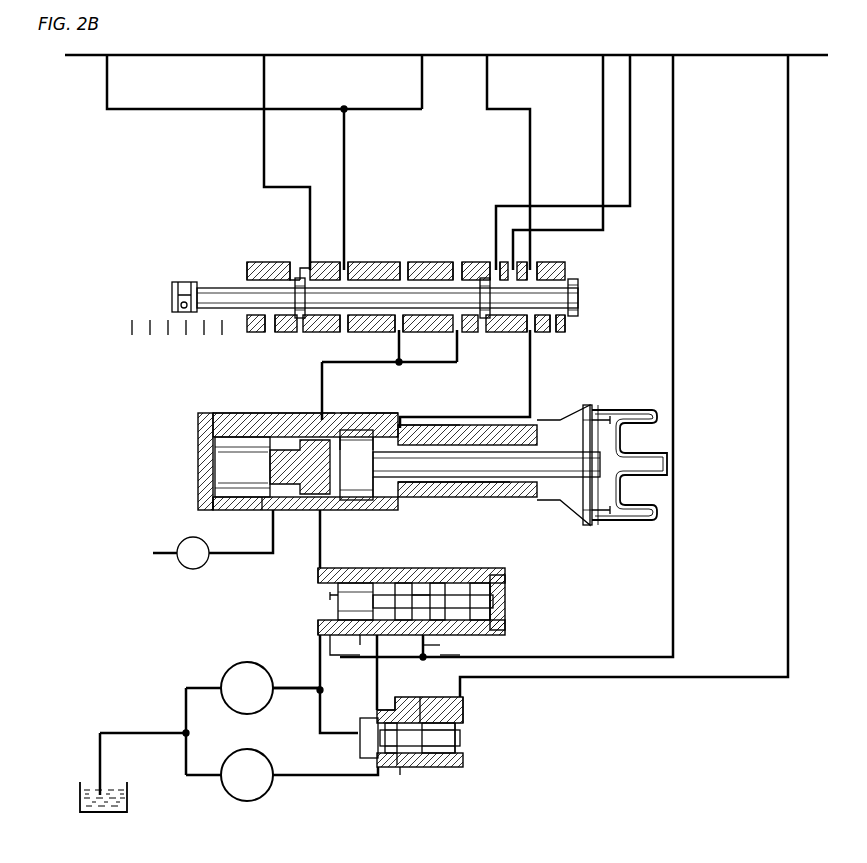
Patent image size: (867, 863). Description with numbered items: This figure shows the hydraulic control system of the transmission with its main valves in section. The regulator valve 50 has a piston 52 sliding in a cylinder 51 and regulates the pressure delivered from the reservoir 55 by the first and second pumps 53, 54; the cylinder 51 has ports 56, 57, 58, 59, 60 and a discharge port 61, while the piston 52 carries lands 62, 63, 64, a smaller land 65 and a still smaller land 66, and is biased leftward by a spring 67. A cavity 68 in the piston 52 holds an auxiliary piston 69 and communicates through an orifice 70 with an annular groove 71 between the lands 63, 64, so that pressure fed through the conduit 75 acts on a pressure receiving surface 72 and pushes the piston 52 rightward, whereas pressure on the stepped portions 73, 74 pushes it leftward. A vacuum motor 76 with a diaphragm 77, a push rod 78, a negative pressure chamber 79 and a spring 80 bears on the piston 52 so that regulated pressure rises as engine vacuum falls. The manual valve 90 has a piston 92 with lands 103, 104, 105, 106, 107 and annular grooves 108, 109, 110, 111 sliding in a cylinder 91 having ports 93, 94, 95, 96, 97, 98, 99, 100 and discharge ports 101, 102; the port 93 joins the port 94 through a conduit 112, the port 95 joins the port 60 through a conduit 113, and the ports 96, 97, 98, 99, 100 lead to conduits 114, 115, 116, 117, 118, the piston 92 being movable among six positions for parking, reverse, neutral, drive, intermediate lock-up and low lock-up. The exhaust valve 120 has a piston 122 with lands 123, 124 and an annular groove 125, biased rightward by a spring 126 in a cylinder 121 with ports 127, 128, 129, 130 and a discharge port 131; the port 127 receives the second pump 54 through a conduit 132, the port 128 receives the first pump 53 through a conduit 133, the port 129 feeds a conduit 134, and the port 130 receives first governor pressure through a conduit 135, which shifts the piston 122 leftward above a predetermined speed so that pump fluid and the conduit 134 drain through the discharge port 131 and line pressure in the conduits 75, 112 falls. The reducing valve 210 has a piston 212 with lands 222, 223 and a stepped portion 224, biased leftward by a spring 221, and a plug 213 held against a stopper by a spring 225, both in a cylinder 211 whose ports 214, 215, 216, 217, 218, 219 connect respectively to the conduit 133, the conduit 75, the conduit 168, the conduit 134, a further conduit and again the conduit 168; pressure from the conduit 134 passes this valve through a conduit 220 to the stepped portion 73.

The regulator valve 50 is at (103, 462).
The cylinder 51 is at (228, 413).
The piston 52 is at (278, 413).
The first pump 53 is at (229, 688).
The second pump 54 is at (186, 744).
The reservoir 55 is at (108, 815).
The port 56 is at (318, 515).
The port 57 is at (325, 413).
The port 58 is at (385, 497).
The port 59 is at (262, 512).
The port 60 is at (412, 425).
The discharge port 61 is at (356, 505).
The land 62 is at (214, 512).
The land 63 is at (302, 413).
The land 64 is at (372, 437).
The land 65 is at (410, 497).
The land 66 is at (440, 425).
The spring 67 is at (478, 497).
The cavity 68 is at (252, 413).
The auxiliary piston 69 is at (213, 445).
The orifice 70 is at (300, 500).
The annular groove 71 is at (343, 437).
The pressure receiving surface 72 is at (270, 555).
The stepped portion 73 is at (385, 413).
The stepped portion 74 is at (450, 497).
The conduit 75 is at (322, 530).
The vacuum motor 76 is at (648, 376).
The diaphragm 77 is at (606, 420).
The push rod 78 is at (520, 500).
The negative pressure chamber 79 is at (606, 512).
The spring 80 is at (650, 522).
The manual valve 90 is at (228, 236).
The cylinder 91 is at (252, 262).
The piston 92 is at (166, 300).
The port 93 is at (397, 332).
The port 94 is at (459, 350).
The port 95 is at (530, 325).
The port 96 is at (458, 262).
The port 97 is at (512, 262).
The port 98 is at (540, 265).
The port 99 is at (350, 262).
The port 100 is at (304, 265).
The discharge port 101 is at (298, 320).
The discharge port 102 is at (552, 332).
The land 103 is at (202, 270).
The land 104 is at (292, 270).
The land 105 is at (404, 262).
The land 106 is at (478, 320).
The land 107 is at (580, 290).
The annular groove 108 is at (268, 322).
The annular groove 109 is at (344, 320).
The annular groove 110 is at (412, 332).
The annular groove 111 is at (566, 318).
The conduit 112 is at (356, 413).
The conduit 113 is at (532, 378).
The conduit 114 is at (632, 85).
The conduit 115 is at (601, 90).
The conduit 116 is at (489, 86).
The conduit 117 is at (110, 83).
The conduit 118 is at (266, 83).
The exhaust valve 120 is at (512, 740).
The cylinder 121 is at (465, 755).
The piston 122 is at (414, 755).
The land 123 is at (397, 762).
The land 124 is at (445, 755).
The annular groove 125 is at (418, 697).
The spring 126 is at (395, 700).
The port 127 is at (377, 770).
The port 128 is at (360, 735).
The port 129 is at (375, 712).
The port 130 is at (466, 705).
The discharge port 131 is at (404, 775).
The conduit 132 is at (305, 777).
The conduit 133 is at (290, 690).
The conduit 134 is at (379, 655).
The conduit 135 is at (540, 694).
The conduit 168 is at (675, 257).
The reducing valve 210 is at (545, 594).
The cylinder 211 is at (400, 583).
The piston 212 is at (320, 628).
The plug 213 is at (490, 566).
The port 214 is at (332, 648).
The port 215 is at (318, 580).
The port 216 is at (342, 650).
The port 217 is at (424, 660).
The port 218 is at (358, 583).
The port 219 is at (425, 638).
The conduit 220 is at (418, 583).
The spring 221 is at (437, 583).
The land 222 is at (330, 597).
The land 223 is at (445, 657).
The stepped portion 224 is at (362, 645).
The spring 225 is at (495, 590).